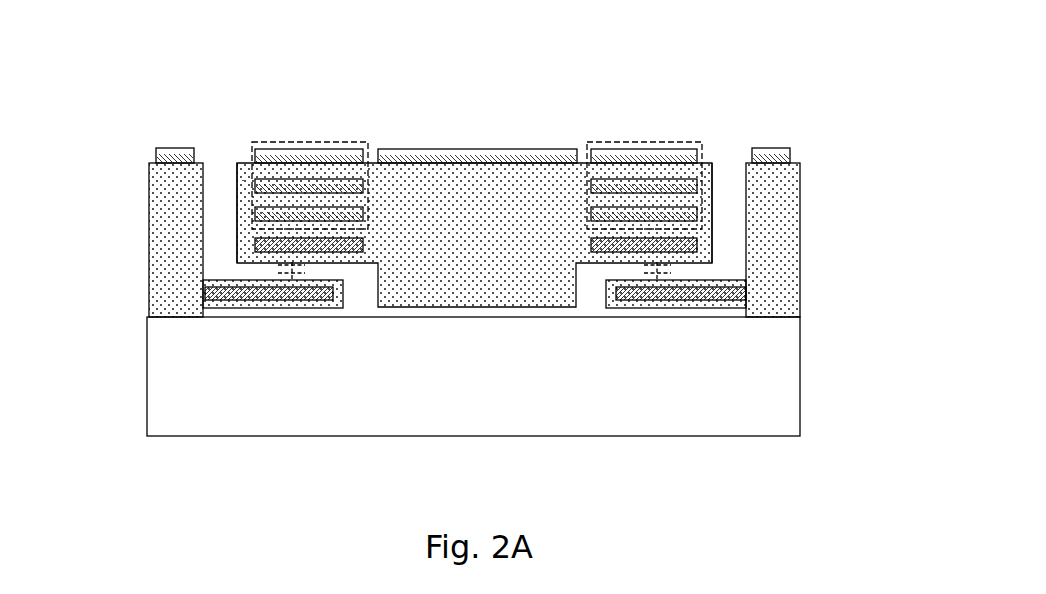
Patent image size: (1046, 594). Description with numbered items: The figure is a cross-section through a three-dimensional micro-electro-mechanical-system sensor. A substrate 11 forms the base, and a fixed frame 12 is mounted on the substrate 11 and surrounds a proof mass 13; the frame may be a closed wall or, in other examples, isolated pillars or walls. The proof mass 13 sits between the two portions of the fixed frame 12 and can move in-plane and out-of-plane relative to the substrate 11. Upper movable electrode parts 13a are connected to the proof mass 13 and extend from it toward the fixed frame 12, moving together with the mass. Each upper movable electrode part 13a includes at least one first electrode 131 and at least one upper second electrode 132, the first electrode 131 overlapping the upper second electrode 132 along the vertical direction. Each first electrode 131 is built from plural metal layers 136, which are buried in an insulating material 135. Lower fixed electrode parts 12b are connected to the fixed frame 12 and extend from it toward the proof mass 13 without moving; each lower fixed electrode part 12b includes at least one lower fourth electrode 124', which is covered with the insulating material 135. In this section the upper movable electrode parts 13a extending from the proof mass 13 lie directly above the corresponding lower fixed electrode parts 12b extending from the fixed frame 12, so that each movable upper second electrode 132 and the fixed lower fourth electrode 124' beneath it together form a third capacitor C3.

The substrate 11 is at (190, 372).
The fixed frame 12 is at (812, 192).
The lower fixed electrode parts 12b is at (595, 303).
The proof mass 13 is at (476, 113).
The upper movable electrode parts 13a is at (235, 135).
The first electrode 131 is at (295, 142).
The upper second electrode 132 is at (278, 245).
The insulating material 135 is at (243, 180).
The metal layers 136 is at (353, 158).
The lower fourth electrode 124' is at (395, 286).
The third capacitor C3 is at (492, 267).